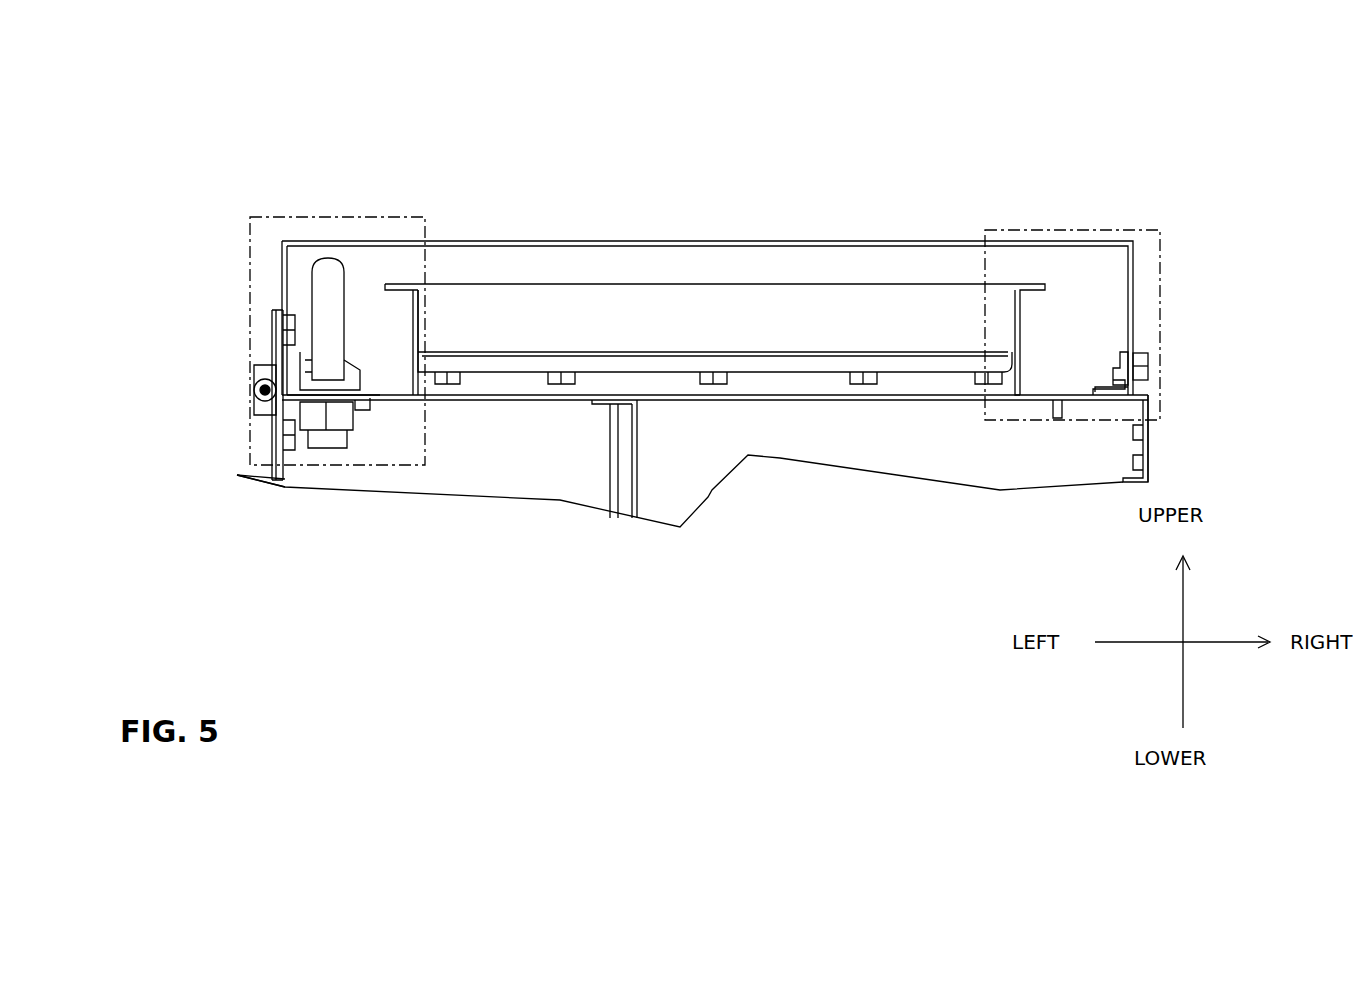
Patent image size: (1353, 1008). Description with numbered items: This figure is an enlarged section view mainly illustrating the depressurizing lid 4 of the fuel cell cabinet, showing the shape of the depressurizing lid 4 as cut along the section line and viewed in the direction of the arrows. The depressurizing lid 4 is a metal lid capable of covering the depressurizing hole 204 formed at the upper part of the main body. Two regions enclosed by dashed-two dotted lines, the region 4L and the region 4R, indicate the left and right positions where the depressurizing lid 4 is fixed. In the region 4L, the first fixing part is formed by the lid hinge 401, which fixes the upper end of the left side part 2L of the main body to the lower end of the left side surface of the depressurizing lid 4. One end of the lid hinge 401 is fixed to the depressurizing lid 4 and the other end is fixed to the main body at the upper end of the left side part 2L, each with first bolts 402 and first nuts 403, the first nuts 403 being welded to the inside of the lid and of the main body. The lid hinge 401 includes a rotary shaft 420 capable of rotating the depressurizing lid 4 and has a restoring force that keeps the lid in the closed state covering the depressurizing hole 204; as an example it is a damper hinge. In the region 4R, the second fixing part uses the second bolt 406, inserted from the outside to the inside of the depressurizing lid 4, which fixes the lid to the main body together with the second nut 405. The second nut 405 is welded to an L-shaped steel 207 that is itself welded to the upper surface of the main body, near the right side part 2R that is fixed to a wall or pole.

The depressurizing lid 4 is at (866, 198).
The region 4L is at (376, 222).
The region 4R is at (1160, 252).
The left side part 2L is at (240, 490).
The right side part 2R is at (1175, 463).
The depressurizing hole 204 is at (635, 285).
The L-shaped steel 207 is at (1103, 390).
The lid hinge 401 is at (252, 378).
The first bolt 402 is at (275, 323).
The first nut 403 is at (290, 372).
The second nut 405 is at (1120, 365).
The second bolt 406 is at (1150, 362).
The rotary shaft 420 is at (255, 383).